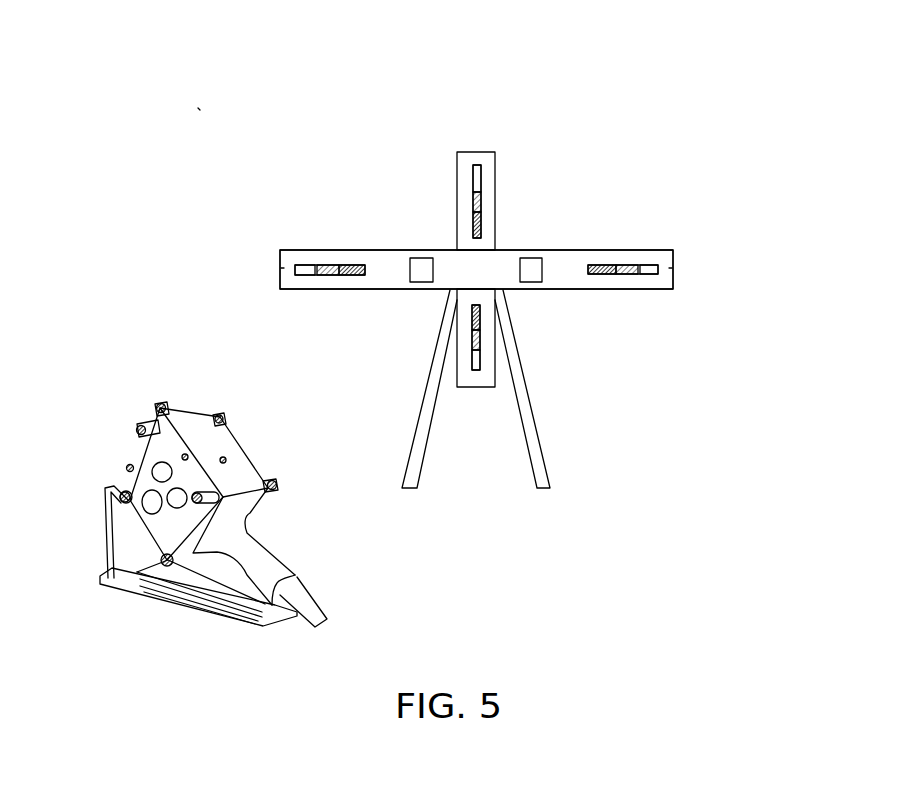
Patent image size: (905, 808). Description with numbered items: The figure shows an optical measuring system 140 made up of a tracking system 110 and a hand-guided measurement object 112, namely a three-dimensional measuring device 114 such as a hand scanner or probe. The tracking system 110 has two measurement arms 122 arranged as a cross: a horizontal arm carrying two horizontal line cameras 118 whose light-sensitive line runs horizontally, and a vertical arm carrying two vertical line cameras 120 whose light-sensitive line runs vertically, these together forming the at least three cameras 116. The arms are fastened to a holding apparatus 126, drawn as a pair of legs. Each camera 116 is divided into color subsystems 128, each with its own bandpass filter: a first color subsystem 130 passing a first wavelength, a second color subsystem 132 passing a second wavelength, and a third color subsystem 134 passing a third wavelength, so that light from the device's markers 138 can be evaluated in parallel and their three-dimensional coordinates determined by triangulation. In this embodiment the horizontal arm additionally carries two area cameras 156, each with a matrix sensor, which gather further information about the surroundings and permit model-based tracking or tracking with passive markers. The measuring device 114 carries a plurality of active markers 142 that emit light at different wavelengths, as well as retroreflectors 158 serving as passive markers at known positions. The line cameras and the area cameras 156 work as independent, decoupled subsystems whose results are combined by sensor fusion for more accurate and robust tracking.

The tracking system 110 is at (602, 138).
The measurement object 112 is at (153, 380).
The 3D measuring device 114 is at (213, 517).
The cameras 116 is at (290, 246).
The horizontal line cameras 118 is at (476, 269).
The vertical line cameras 120 is at (476, 269).
The measurement arms 122 is at (326, 262).
The holding apparatus 126 is at (548, 470).
The color subsystems 128 is at (280, 268).
The first color subsystem 130 is at (296, 282).
The second color subsystem 132 is at (330, 280).
The third color subsystem 134 is at (357, 280).
The markers 138 is at (158, 407).
The optical measuring system 140 is at (200, 110).
The markers 142 is at (208, 447).
The area cameras 156 is at (422, 258).
The retroreflectors 158 is at (128, 500).